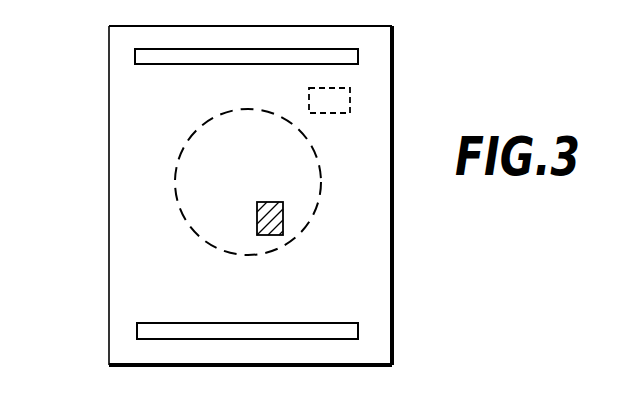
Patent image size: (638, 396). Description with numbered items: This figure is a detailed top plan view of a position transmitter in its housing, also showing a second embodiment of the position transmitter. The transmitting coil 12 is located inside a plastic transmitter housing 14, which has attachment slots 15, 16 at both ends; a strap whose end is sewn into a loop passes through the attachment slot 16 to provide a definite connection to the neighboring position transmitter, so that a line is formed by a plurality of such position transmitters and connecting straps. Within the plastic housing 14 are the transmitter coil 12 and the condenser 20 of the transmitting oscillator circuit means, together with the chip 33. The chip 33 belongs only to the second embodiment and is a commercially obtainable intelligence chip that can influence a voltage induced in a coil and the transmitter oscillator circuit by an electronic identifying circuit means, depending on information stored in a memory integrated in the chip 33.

The plastic transmitter housing 14 is at (125, 143).
The attachment slot 15 is at (358, 52).
The attachment slot 16 is at (358, 330).
The chip 33 is at (350, 100).
The transmitting coil 12 is at (322, 172).
The condenser 20 is at (283, 217).